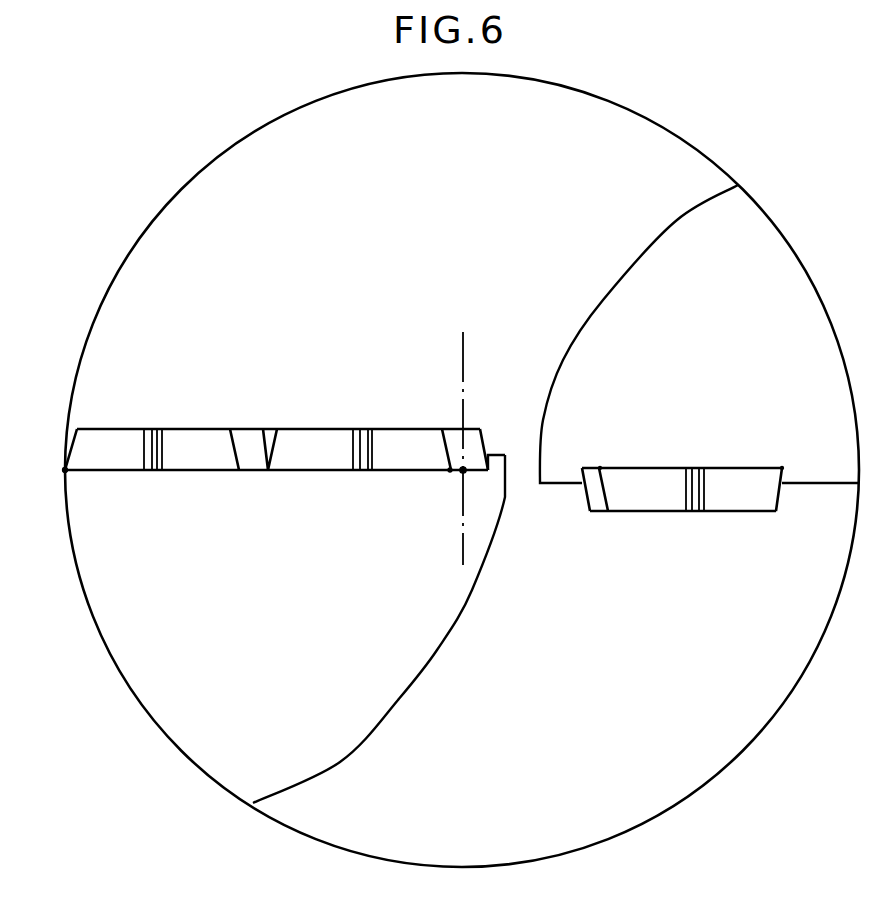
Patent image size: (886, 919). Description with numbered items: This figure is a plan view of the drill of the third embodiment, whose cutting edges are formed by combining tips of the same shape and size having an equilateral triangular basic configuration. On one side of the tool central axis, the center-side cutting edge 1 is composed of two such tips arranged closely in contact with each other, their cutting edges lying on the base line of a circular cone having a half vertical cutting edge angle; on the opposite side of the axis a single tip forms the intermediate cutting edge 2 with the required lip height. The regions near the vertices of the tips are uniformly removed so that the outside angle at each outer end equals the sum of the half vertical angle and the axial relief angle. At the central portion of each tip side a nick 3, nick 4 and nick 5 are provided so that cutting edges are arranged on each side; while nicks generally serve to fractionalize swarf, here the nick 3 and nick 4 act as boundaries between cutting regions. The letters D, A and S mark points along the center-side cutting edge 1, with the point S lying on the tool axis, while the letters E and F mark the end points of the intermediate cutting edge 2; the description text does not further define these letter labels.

The center-side cutting edge 1 is at (200, 474).
The intermediate cutting edge 2 is at (729, 468).
The nick 3 is at (360, 474).
The nick 4 is at (148, 474).
The nick 5 is at (697, 468).
The left end point of strip 1 D is at (65, 470).
The division point on strip 1 A is at (450, 472).
The axis point on strip 1 S is at (463, 470).
The left end point of strip 2 E is at (600, 468).
The right end point of strip 2 F is at (782, 468).